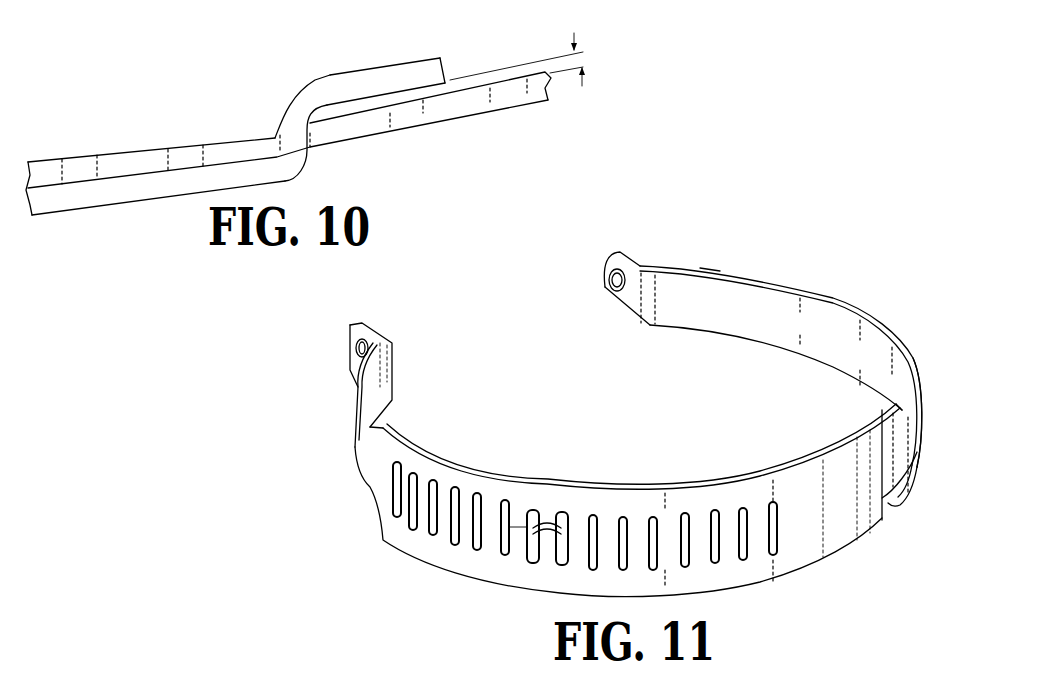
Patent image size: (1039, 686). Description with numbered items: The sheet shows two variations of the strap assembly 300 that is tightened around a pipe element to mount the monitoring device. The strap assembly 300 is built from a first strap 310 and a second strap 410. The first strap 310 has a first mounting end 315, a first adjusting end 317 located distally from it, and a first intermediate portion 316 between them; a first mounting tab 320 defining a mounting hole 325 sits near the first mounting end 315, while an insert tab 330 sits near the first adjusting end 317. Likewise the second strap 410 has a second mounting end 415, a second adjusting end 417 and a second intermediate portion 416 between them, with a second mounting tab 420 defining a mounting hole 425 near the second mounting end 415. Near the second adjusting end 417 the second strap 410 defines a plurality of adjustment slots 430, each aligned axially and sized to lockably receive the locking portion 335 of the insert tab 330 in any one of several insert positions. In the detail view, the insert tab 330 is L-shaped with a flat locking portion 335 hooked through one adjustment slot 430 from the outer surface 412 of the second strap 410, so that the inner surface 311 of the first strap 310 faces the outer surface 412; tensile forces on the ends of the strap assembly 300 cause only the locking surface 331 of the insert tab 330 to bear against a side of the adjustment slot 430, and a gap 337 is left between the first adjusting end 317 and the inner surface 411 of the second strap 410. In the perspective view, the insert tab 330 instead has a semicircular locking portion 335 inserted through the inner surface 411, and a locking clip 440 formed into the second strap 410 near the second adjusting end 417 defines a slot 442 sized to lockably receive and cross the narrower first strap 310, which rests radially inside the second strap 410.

In FIG. 10, the strap assembly 300 is at (237, 46).
In FIG. 11, the strap assembly 300 is at (798, 215).
In FIG. 10, the first strap 310 is at (50, 217).
In FIG. 11, the first strap 310 is at (847, 347).
In FIG. 10, the inner surface of the first strap 311 is at (128, 174).
In FIG. 11, the first mounting end 315 is at (603, 275).
In FIG. 11, the first intermediate portion 316 is at (720, 313).
In FIG. 10, the first adjusting end 317 is at (443, 63).
In FIG. 11, the first adjusting end 317 is at (507, 553).
In FIG. 11, the first mounting tab 320 is at (623, 257).
In FIG. 11, the mounting hole 325 is at (608, 300).
In FIG. 11, the insert tab 330 is at (542, 548).
In FIG. 10, the locking surface 331 is at (278, 140).
In FIG. 10, the locking portion 335 is at (357, 72).
In FIG. 11, the locking portion 335 is at (552, 557).
In FIG. 10, the gap 337 is at (587, 55).
In FIG. 10, the second strap 410 is at (467, 120).
In FIG. 11, the second strap 410 is at (417, 538).
In FIG. 11, the inner surface of the second strap 411 is at (383, 380).
In FIG. 10, the outer surface of the second strap 412 is at (149, 184).
In FIG. 11, the second mounting end 415 is at (348, 345).
In FIG. 11, the second intermediate portion 416 is at (363, 445).
In FIG. 11, the second adjusting end 417 is at (902, 415).
In FIG. 11, the second mounting tab 420 is at (348, 338).
In FIG. 11, the mounting hole 425 is at (348, 362).
In FIG. 10, the adjustment slots 430 is at (398, 127).
In FIG. 11, the adjustment slots 430 is at (778, 527).
In FIG. 11, the locking clip 440 is at (893, 500).
In FIG. 11, the slot 442 is at (920, 415).